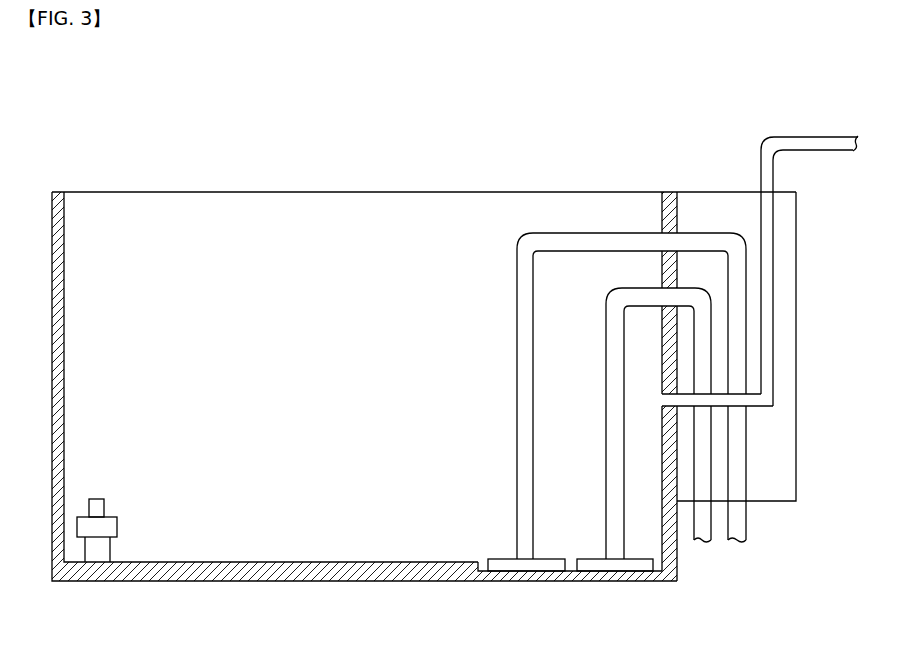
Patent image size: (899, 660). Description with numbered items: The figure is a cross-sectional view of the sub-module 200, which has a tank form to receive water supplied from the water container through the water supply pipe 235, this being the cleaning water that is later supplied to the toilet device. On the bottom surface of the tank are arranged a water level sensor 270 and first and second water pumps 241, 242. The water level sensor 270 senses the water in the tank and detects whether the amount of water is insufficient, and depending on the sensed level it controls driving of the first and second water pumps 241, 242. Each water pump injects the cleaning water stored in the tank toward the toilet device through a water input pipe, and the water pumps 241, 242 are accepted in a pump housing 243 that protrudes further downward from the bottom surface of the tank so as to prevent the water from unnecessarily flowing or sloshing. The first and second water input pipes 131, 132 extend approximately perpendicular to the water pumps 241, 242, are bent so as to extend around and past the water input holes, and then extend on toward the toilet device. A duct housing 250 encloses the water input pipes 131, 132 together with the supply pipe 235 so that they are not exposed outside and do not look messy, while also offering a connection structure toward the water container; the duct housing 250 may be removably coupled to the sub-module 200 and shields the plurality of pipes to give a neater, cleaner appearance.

The sub-module 200 is at (223, 152).
The duct housing 250 is at (717, 205).
The water supply pipe 235 is at (810, 146).
The first water input pipe 131 is at (617, 337).
The second water input pipe 132 is at (522, 389).
The water level sensor 270 is at (93, 497).
The first water pump 241 is at (618, 563).
The second water pump 242 is at (534, 562).
The pump housing 243 is at (479, 570).